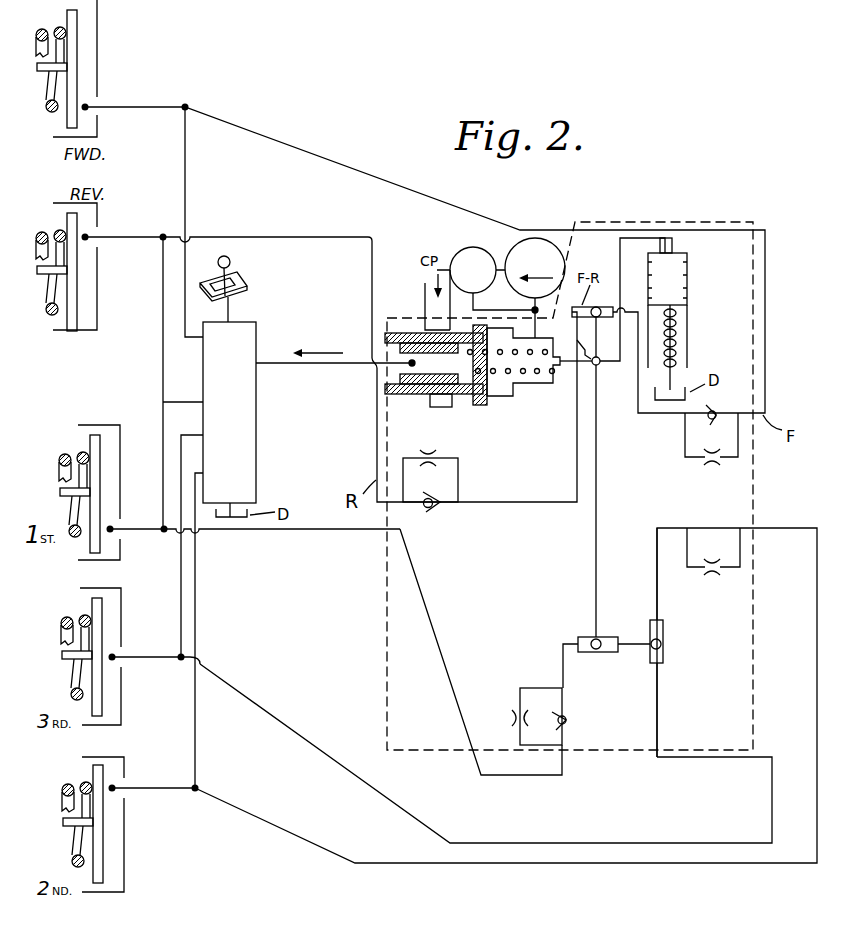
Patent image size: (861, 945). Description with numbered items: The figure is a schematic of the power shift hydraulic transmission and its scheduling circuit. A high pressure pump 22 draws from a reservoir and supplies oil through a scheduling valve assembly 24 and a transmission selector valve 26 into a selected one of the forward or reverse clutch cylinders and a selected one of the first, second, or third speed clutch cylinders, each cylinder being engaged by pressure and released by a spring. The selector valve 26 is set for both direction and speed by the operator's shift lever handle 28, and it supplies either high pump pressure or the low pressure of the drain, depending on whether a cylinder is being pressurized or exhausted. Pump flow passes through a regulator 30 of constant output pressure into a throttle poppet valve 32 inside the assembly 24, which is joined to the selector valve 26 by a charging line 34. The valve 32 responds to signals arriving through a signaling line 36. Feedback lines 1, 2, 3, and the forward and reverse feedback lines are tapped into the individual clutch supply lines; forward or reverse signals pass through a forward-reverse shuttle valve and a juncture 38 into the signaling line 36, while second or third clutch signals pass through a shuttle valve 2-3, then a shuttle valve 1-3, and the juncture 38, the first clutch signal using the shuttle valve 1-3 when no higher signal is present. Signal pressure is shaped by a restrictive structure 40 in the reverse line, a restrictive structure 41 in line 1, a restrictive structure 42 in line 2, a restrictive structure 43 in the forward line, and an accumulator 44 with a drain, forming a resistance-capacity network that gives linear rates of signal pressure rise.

The feedback line 1 is at (545, 777).
The feedback line 2 is at (800, 528).
The feedback line 3 is at (769, 757).
The high pressure pump 22 is at (553, 240).
The scheduling valve assembly 24 is at (750, 222).
The transmission selector valve 26 is at (257, 336).
The shift lever handle 28 is at (231, 263).
The regulator 30 is at (488, 244).
The throttle poppet valve 32 is at (416, 330).
The charging line 34 is at (283, 363).
The signaling line 36 is at (555, 378).
The juncture 38 is at (600, 366).
The restrictive structure 40 is at (449, 514).
The restrictive structure 41 is at (510, 688).
The restrictive structure 42 is at (682, 521).
The restrictive structure 43 is at (672, 452).
The accumulator 44 is at (688, 305).
The shuttle valve 1-3 is at (585, 653).
The shuttle valve 2-3 is at (664, 652).